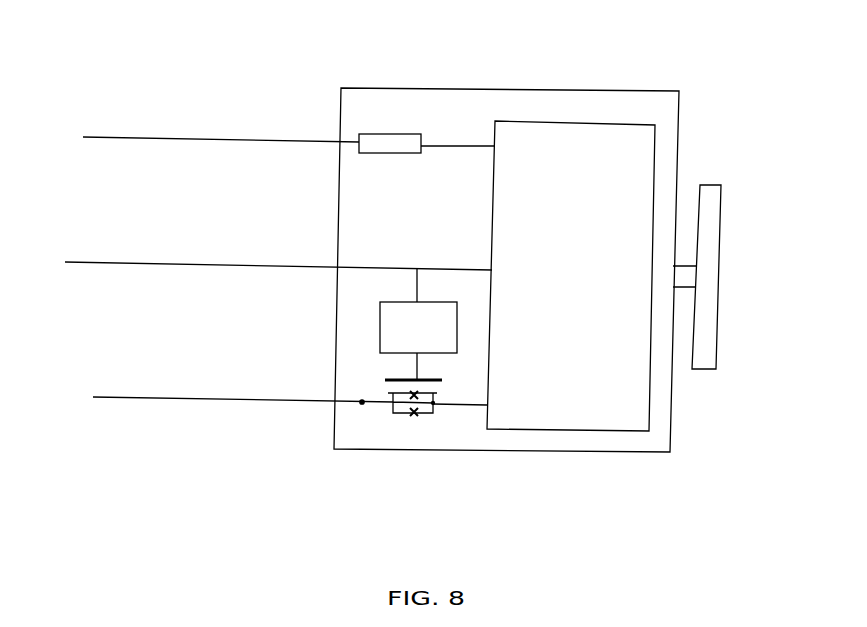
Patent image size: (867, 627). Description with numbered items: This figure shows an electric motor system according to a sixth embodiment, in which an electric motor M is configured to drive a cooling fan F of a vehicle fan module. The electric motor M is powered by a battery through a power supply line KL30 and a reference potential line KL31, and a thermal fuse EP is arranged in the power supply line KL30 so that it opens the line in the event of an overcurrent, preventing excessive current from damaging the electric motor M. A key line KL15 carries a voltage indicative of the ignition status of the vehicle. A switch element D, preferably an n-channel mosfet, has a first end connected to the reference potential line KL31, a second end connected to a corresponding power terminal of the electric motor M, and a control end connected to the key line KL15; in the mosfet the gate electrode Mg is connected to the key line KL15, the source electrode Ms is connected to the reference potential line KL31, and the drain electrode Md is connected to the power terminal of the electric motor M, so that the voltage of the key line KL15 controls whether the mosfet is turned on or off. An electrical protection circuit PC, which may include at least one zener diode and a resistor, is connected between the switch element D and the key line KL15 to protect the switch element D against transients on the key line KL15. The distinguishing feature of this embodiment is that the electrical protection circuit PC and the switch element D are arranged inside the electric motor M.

The electric motor M is at (654, 102).
The cooling fan F is at (716, 192).
The power supply line KL30 is at (106, 137).
The key line KL15 is at (80, 262).
The reference potential line KL31 is at (107, 393).
The thermal fuse EP is at (404, 137).
The electrical protection circuit PC is at (390, 335).
The gate electrode Mg is at (414, 366).
The switch element D is at (438, 412).
The drain electrode Md is at (458, 406).
The source electrode Ms is at (362, 402).